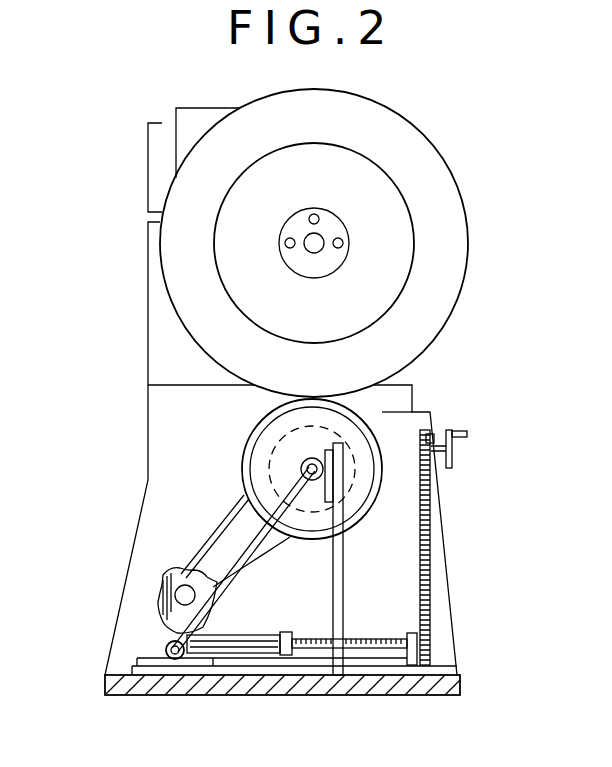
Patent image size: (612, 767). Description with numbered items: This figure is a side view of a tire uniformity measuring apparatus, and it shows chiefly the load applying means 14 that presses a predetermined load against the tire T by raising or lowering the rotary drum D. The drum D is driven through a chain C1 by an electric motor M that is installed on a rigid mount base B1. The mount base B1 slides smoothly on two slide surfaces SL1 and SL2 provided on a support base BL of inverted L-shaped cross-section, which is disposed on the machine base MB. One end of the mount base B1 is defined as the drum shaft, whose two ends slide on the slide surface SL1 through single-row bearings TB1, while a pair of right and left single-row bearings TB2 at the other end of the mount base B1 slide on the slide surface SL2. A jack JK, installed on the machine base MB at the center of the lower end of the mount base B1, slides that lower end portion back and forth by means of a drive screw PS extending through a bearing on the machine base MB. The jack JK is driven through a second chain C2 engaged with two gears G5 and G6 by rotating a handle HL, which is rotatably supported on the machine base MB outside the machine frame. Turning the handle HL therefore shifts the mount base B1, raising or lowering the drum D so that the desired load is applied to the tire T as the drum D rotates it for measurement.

The load applying means 14 is at (147, 595).
The tire T is at (431, 156).
The rotary drum D is at (243, 479).
The single-row bearings TB1 is at (302, 465).
The slide surface SL1 is at (331, 441).
The chain C1 is at (215, 527).
The electric motor M is at (165, 574).
The mount base B1 is at (214, 600).
The single-row bearings TB2 is at (166, 648).
The jack JK is at (283, 636).
The drive screw PS is at (376, 639).
The chain C2 is at (431, 540).
The gear G6 is at (433, 436).
The handle HL is at (455, 450).
The gear G5 is at (433, 643).
The support base BL is at (314, 672).
The slide surface SL2 is at (163, 663).
The machine base MB is at (238, 682).